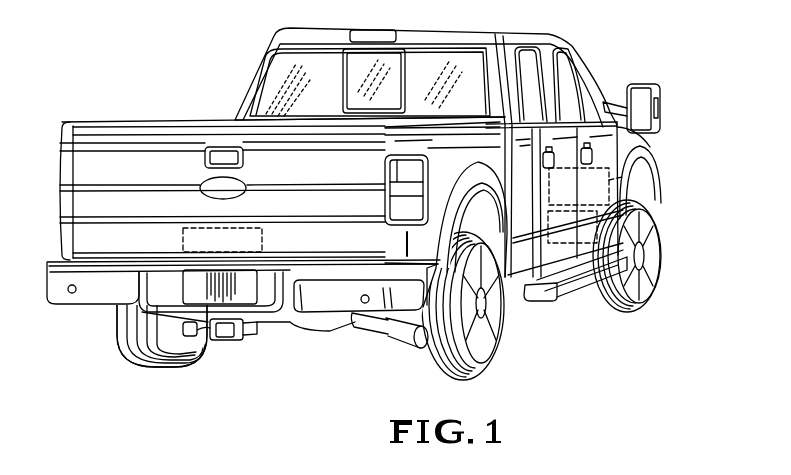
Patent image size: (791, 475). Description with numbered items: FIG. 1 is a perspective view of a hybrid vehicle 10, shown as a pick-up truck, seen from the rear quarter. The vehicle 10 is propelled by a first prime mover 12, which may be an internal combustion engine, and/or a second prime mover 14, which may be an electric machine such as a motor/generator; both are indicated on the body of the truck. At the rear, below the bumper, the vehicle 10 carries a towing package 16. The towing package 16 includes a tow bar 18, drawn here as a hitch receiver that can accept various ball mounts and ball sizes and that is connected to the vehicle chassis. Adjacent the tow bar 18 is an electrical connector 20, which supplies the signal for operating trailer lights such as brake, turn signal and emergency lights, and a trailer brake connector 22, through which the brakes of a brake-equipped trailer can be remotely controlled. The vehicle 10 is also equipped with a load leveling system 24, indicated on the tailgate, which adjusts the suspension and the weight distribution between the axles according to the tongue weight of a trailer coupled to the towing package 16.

The hybrid vehicle 10 is at (178, 57).
The first prime mover 12 is at (623, 176).
The second prime mover 14 is at (586, 245).
The towing package 16 is at (227, 361).
The tow bar 18 is at (255, 338).
The electrical connector 20 is at (183, 328).
The trailer brake connector 22 is at (150, 362).
The load leveling system 24 is at (183, 245).